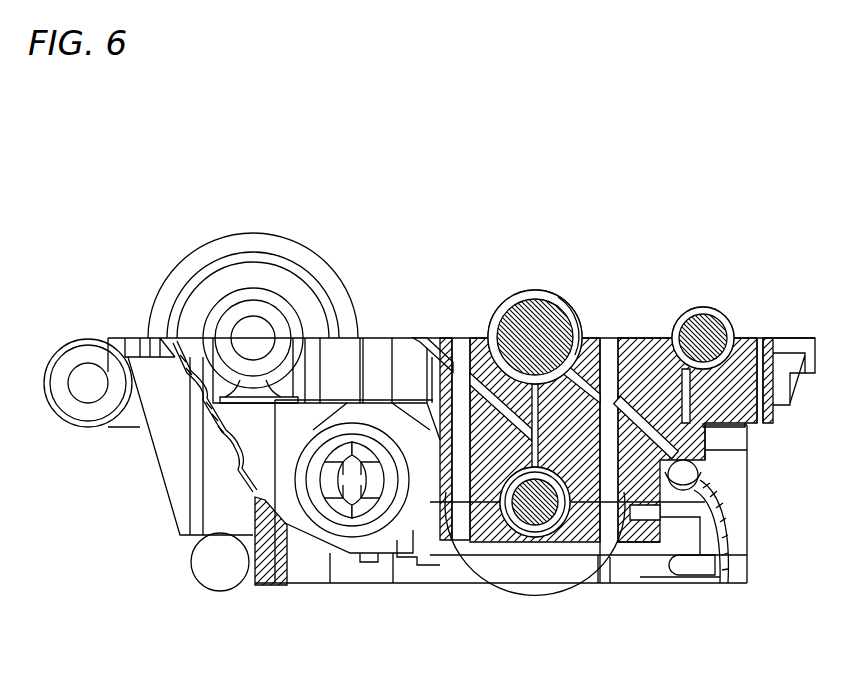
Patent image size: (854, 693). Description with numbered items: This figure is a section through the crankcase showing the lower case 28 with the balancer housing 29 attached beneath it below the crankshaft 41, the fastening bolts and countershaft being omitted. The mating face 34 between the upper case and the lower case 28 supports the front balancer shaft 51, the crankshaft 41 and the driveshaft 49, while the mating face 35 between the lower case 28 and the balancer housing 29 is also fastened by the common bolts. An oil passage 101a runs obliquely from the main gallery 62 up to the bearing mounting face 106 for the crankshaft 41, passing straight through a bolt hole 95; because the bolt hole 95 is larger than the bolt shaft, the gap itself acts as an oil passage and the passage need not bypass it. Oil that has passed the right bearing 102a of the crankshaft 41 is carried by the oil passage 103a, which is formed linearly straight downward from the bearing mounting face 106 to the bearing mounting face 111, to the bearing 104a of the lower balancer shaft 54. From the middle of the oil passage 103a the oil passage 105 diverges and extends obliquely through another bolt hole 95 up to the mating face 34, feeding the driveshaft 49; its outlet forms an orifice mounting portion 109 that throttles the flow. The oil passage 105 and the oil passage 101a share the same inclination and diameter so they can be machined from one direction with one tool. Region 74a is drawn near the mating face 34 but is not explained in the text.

The driveshaft 49 is at (263, 307).
The orifice mounting portion 109 is at (435, 338).
The oil passage 105 is at (478, 338).
The bearing 102a is at (515, 300).
The crankshaft 41 is at (542, 307).
The bearing mounting face 106 is at (573, 332).
The mating face 34 is at (639, 338).
The oil passage 74a is at (658, 338).
The front balancer shaft 51 is at (712, 312).
The lower case 28 is at (790, 348).
The bearing mounting face 111 is at (553, 478).
The main gallery 62 is at (690, 472).
The bolt hole 95 is at (460, 467).
The oil passage 103a is at (440, 525).
The lower balancer shaft 54 is at (500, 535).
The bearing 104a is at (532, 522).
The balancer housing 29 is at (547, 580).
The mating face 35 is at (598, 490).
The oil passage 101a is at (648, 510).